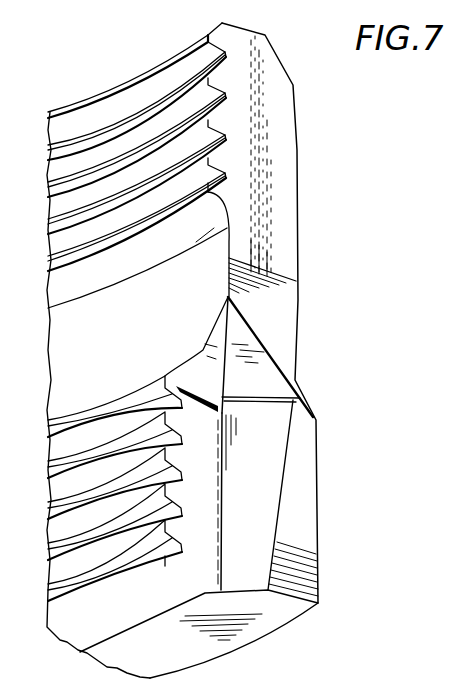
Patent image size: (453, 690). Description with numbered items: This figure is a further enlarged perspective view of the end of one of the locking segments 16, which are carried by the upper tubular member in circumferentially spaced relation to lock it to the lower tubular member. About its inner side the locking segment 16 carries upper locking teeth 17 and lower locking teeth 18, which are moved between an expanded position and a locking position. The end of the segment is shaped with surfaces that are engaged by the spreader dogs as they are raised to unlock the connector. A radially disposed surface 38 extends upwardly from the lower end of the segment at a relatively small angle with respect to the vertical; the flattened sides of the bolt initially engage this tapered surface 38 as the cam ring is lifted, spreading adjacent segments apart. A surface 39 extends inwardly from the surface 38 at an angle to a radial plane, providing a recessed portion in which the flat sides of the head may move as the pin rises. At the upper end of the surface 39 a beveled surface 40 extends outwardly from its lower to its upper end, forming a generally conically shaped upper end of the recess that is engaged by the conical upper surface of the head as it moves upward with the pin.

The locking segment 16 is at (298, 154).
The upper locking teeth 17 is at (128, 97).
The lower locking teeth 18 is at (128, 422).
The radially disposed surface 38 is at (283, 332).
The surface 39 is at (265, 455).
The beveled surface 40 is at (258, 377).